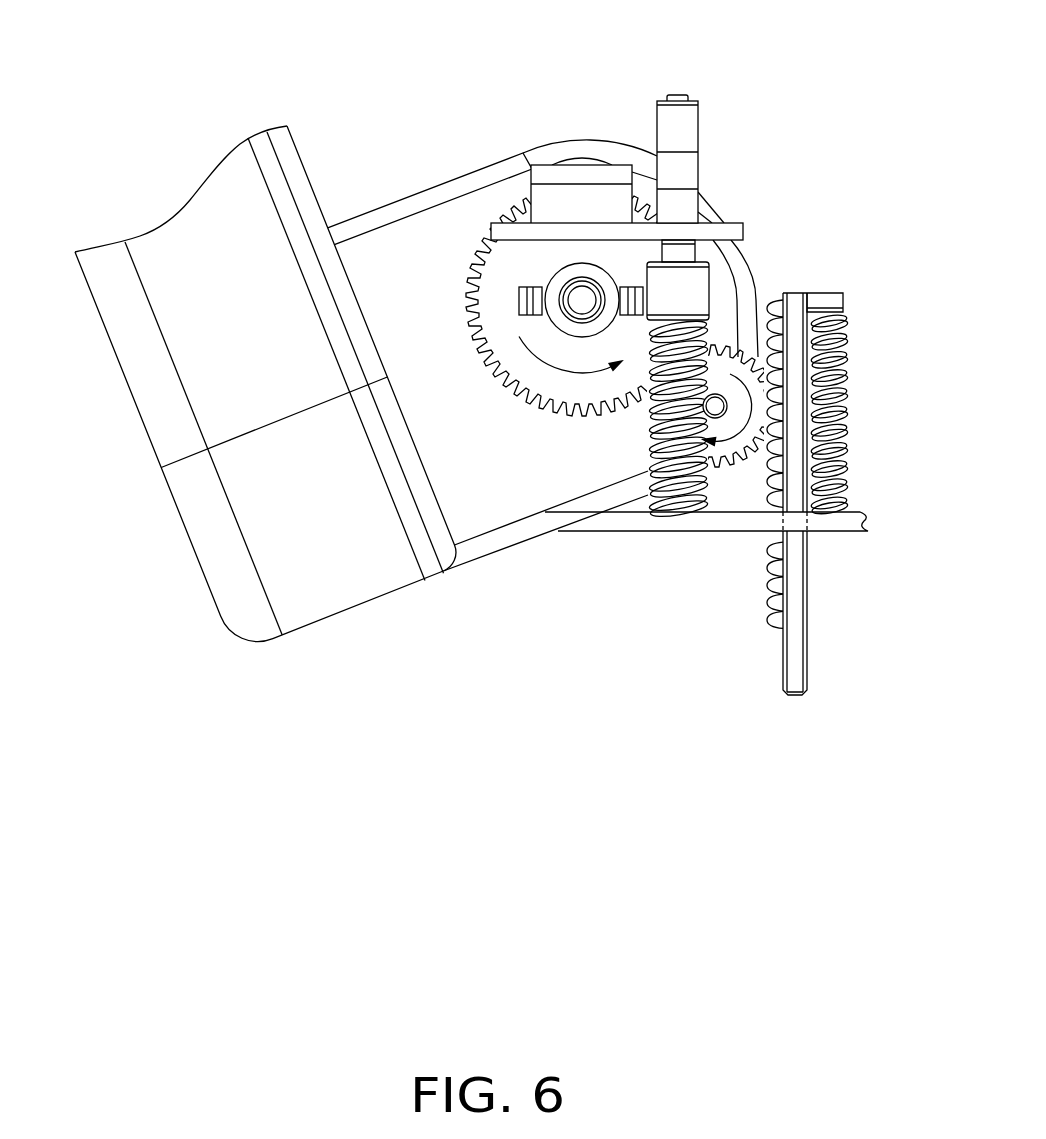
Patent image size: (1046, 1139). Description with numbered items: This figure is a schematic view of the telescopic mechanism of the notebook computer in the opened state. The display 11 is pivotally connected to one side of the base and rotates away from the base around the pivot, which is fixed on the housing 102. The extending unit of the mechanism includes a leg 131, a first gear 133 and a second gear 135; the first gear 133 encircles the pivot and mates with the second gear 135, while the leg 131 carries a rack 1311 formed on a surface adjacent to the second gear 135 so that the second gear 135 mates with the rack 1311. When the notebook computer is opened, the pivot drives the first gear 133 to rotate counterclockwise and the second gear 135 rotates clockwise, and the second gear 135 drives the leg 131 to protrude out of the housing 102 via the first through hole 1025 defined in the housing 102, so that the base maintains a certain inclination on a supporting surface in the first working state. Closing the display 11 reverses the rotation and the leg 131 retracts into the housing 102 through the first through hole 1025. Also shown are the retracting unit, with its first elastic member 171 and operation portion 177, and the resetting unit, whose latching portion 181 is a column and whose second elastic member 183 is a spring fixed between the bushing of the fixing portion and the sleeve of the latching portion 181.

The display 11 is at (188, 258).
The housing 102 is at (600, 523).
The first through hole 1025 is at (808, 523).
The leg 131 is at (795, 655).
The rack 1311 is at (768, 626).
The first gear 133 is at (530, 400).
The second gear 135 is at (737, 478).
The first elastic member 171 is at (853, 371).
The operation portion 177 is at (716, 62).
The latching portion 181 is at (722, 279).
The second elastic member 183 is at (663, 500).